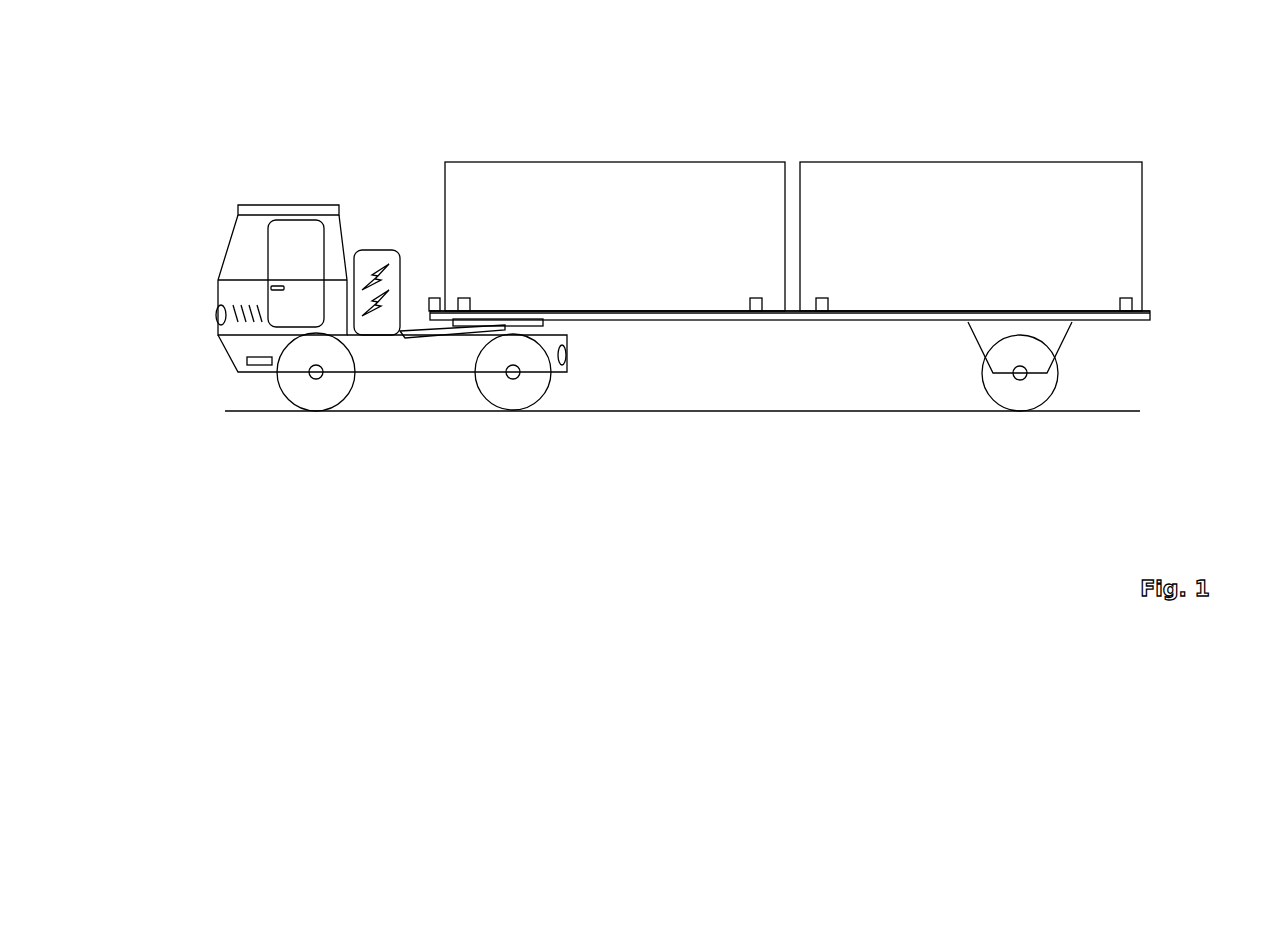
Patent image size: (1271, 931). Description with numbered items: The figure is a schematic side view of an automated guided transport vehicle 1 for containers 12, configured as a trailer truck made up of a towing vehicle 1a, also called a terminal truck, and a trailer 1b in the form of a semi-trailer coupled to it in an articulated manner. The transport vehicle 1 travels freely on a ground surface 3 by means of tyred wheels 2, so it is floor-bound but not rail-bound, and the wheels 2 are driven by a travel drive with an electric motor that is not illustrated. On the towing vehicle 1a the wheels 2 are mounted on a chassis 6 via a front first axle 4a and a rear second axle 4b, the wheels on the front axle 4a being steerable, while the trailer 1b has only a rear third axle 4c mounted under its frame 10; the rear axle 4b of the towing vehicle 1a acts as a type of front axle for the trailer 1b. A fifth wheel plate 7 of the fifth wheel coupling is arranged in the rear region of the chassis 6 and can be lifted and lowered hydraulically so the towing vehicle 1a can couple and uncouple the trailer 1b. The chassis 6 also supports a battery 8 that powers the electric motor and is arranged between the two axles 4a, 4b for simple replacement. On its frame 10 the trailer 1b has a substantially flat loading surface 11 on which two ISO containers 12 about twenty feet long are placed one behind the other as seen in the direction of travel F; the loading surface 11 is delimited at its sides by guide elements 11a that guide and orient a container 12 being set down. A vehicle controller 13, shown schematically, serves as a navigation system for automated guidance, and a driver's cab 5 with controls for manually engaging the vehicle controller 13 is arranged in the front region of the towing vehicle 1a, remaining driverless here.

The transport vehicle 1 is at (678, 97).
The towing vehicle 1a is at (293, 165).
The trailer 1b is at (802, 142).
The wheels 2 is at (296, 388).
The ground surface 3 is at (670, 411).
The front first axle 4a is at (311, 382).
The rear second axle 4b is at (505, 380).
The third axle 4c is at (1022, 380).
The driver's cab 5 is at (253, 239).
The chassis 6 is at (392, 360).
The fifth wheel plate 7 is at (440, 340).
The battery 8 is at (381, 249).
The frame 10 is at (903, 320).
The loading surface 11 is at (706, 309).
The guide elements 11a is at (433, 296).
The containers 12 is at (598, 231).
The vehicle controller 13 is at (246, 361).
The direction of travel F is at (1188, 105).